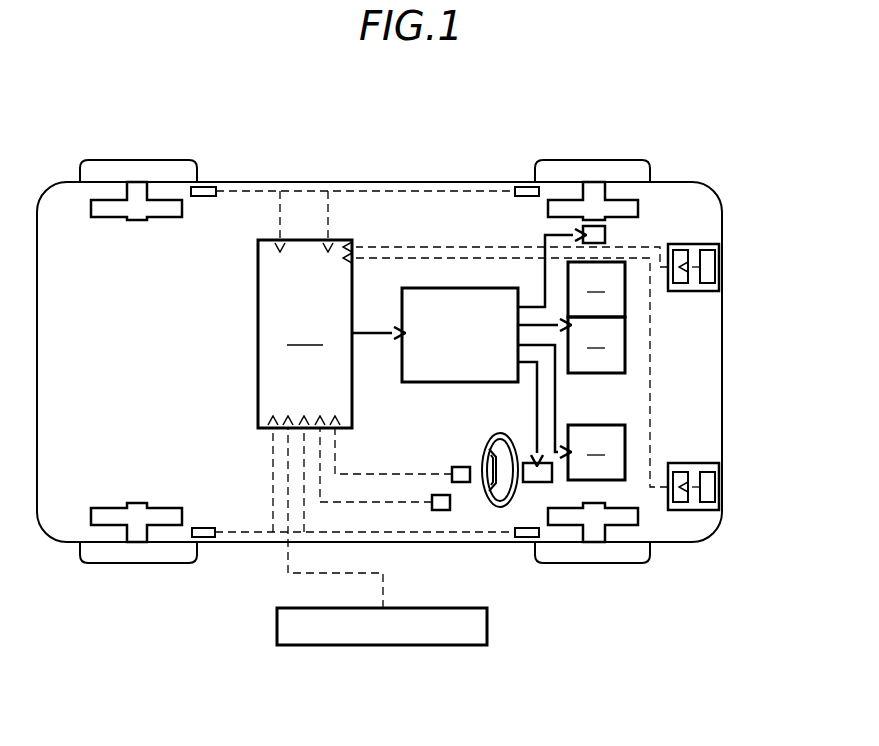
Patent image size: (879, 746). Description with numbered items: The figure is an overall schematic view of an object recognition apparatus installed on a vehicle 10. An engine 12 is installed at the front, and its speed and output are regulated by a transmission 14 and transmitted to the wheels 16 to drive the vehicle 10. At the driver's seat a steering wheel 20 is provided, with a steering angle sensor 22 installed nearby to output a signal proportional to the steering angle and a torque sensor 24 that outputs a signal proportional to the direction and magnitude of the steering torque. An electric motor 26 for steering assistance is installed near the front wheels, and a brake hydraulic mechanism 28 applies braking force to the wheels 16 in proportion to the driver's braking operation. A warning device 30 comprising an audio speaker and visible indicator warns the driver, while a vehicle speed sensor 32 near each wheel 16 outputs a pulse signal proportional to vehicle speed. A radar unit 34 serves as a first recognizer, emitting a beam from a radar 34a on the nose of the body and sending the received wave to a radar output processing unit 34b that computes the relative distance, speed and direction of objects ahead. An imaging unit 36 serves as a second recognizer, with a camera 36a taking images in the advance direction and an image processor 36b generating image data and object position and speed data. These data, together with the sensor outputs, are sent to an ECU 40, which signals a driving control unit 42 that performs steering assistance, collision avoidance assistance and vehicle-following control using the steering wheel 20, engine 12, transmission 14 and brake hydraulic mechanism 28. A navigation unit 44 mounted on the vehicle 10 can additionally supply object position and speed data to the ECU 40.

The vehicle 10 is at (688, 145).
The engine 12 is at (571, 345).
The transmission 14 is at (596, 289).
The wheels 16 is at (197, 172).
The steering wheel 20 is at (490, 442).
The steering angle sensor 22 is at (451, 503).
The torque sensor 24 is at (458, 466).
The electric motor 26 is at (607, 239).
The brake hydraulic mechanism 28 is at (571, 412).
The warning device 30 is at (552, 483).
The vehicle speed sensor 32 is at (205, 198).
The radar unit 34 is at (579, 251).
The radar 34a is at (731, 259).
The radar output processing unit 34b is at (687, 252).
The imaging unit 36 is at (579, 384).
The camera 36a is at (731, 483).
The image processor 36b is at (687, 473).
The ECU 40 is at (257, 270).
The driving control unit 42 is at (498, 288).
The navigation unit 44 is at (475, 607).